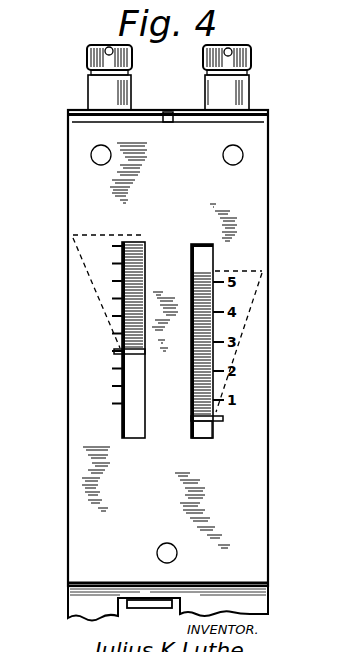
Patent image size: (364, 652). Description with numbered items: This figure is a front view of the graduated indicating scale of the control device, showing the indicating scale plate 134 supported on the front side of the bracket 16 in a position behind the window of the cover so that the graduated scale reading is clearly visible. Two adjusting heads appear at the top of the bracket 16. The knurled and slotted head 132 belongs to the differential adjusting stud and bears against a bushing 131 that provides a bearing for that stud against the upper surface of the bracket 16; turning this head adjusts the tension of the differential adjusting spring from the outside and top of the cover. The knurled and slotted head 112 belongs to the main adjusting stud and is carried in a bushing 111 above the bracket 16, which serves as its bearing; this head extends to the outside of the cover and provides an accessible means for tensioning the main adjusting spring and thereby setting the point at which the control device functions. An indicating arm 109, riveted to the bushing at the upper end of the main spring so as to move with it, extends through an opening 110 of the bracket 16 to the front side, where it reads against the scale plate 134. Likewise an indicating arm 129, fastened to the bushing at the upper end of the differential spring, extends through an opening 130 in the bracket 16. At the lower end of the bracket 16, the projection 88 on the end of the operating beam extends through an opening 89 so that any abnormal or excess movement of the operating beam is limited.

The bracket 16 is at (75, 596).
The projection 88 is at (145, 598).
The opening 89 is at (124, 613).
The indicating arm 109 is at (115, 351).
The opening 110 is at (131, 418).
The bushing 111 is at (237, 86).
The knurled and slotted head 112 is at (251, 55).
The indicating arm 129 is at (222, 425).
The opening 130 is at (207, 432).
The bushing 131 is at (100, 90).
The knurled and slotted head 132 is at (87, 56).
The indicating scale plate 134 is at (80, 189).